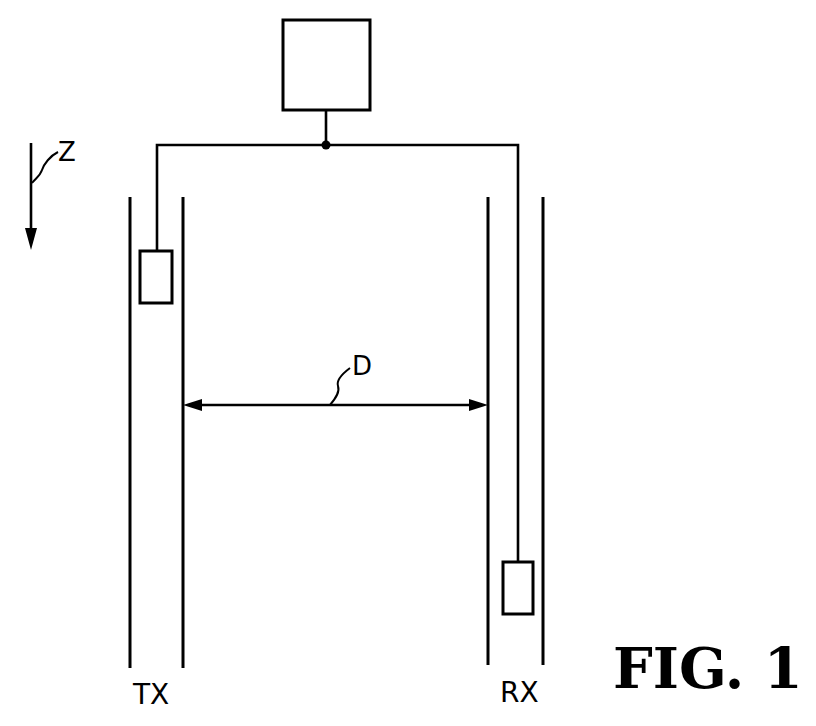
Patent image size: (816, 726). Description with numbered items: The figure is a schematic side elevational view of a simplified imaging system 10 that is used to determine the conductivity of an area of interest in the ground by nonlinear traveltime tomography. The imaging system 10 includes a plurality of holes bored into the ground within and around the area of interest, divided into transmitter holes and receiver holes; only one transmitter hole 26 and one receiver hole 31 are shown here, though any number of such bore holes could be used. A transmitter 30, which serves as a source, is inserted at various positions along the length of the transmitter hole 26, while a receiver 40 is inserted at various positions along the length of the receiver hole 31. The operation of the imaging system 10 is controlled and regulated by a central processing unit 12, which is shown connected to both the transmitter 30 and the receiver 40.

The imaging system 10 is at (193, 100).
The central processing unit 12 is at (370, 72).
The transmitter hole 26 is at (152, 382).
The transmitter 30 is at (163, 283).
The receiver hole 31 is at (520, 435).
The receiver 40 is at (518, 597).